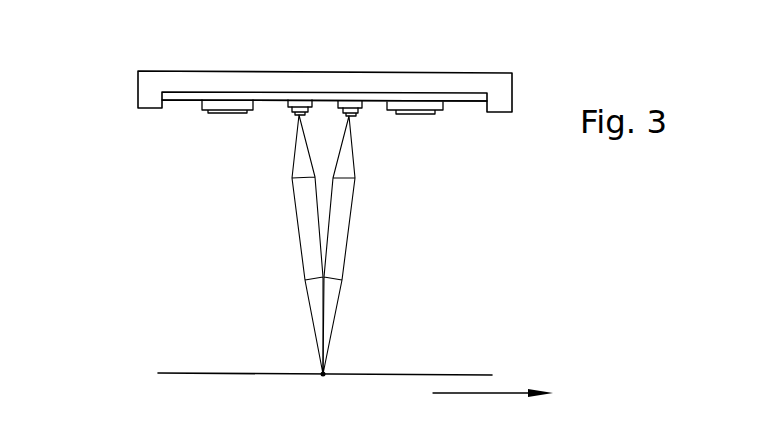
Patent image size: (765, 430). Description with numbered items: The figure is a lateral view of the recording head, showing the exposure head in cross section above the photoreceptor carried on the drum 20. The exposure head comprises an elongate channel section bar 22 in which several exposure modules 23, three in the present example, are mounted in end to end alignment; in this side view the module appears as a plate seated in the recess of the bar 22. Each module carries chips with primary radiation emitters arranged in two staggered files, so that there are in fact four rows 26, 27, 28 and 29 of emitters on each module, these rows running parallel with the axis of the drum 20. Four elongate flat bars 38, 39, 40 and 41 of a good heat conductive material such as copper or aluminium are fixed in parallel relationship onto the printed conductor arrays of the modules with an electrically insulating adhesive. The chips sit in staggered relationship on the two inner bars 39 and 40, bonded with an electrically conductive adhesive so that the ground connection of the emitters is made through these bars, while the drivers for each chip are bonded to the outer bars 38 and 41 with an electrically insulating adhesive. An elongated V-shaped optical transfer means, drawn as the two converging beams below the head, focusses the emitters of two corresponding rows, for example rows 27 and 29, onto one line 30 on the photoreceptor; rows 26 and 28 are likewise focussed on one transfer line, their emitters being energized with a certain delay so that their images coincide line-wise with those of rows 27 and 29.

The drum 20 is at (202, 373).
The channel section bar 22 is at (148, 84).
The exposure module 23 is at (178, 97).
The row of emitters 26 is at (356, 104).
The row of emitters 27 is at (347, 104).
The row of emitters 28 is at (303, 104).
The row of emitters 29 is at (297, 103).
The line on the photoreceptor 30 is at (325, 374).
The outer flat bar 38 is at (443, 111).
The inner flat bar 39 is at (362, 107).
The inner flat bar 40 is at (280, 108).
The outer flat bar 41 is at (212, 108).